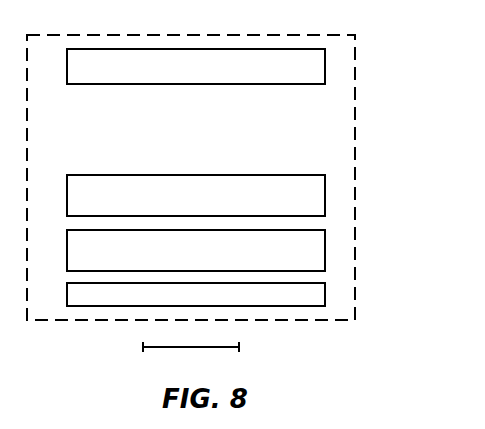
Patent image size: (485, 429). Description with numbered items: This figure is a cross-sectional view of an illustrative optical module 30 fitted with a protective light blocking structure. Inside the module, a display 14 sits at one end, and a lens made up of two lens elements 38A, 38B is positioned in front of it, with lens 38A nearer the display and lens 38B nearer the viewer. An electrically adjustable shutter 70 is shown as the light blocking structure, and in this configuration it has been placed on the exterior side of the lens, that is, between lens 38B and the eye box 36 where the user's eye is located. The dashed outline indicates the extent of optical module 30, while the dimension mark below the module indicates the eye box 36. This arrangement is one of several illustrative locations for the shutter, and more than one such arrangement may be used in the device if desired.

The display 14 is at (317, 63).
The optical module 30 is at (355, 130).
The lens 38A is at (315, 193).
The lens 38B is at (315, 253).
The adjustable shutter 70 is at (315, 295).
The eye box 36 is at (239, 347).